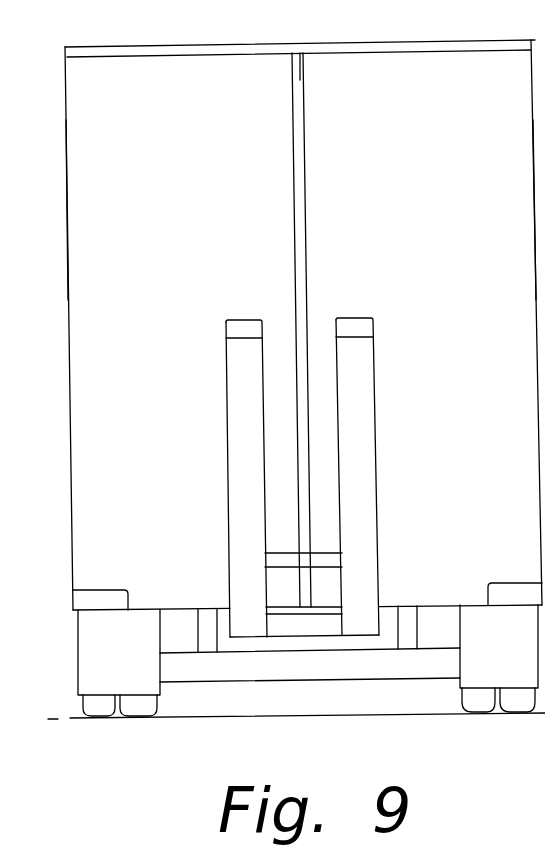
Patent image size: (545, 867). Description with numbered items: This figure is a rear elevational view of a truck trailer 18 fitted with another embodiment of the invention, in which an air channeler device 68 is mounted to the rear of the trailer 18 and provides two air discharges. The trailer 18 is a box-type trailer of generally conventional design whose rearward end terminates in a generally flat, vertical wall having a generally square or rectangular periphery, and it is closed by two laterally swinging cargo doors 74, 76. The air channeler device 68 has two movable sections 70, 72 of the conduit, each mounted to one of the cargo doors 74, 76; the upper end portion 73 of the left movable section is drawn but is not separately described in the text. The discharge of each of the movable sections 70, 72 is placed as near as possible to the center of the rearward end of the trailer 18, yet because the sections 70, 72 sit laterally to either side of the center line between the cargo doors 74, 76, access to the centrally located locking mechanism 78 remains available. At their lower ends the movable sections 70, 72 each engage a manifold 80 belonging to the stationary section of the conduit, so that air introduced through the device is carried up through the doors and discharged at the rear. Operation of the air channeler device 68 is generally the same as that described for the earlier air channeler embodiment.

The trailer 18 is at (400, 42).
The air channeler device 68 is at (396, 504).
The movable section 70 is at (236, 398).
The movable section 72 is at (368, 385).
The post cap 73 is at (241, 330).
The cargo door 74 is at (200, 210).
The cargo door 76 is at (421, 207).
The locking mechanism 78 is at (280, 552).
The manifold 80 is at (292, 625).